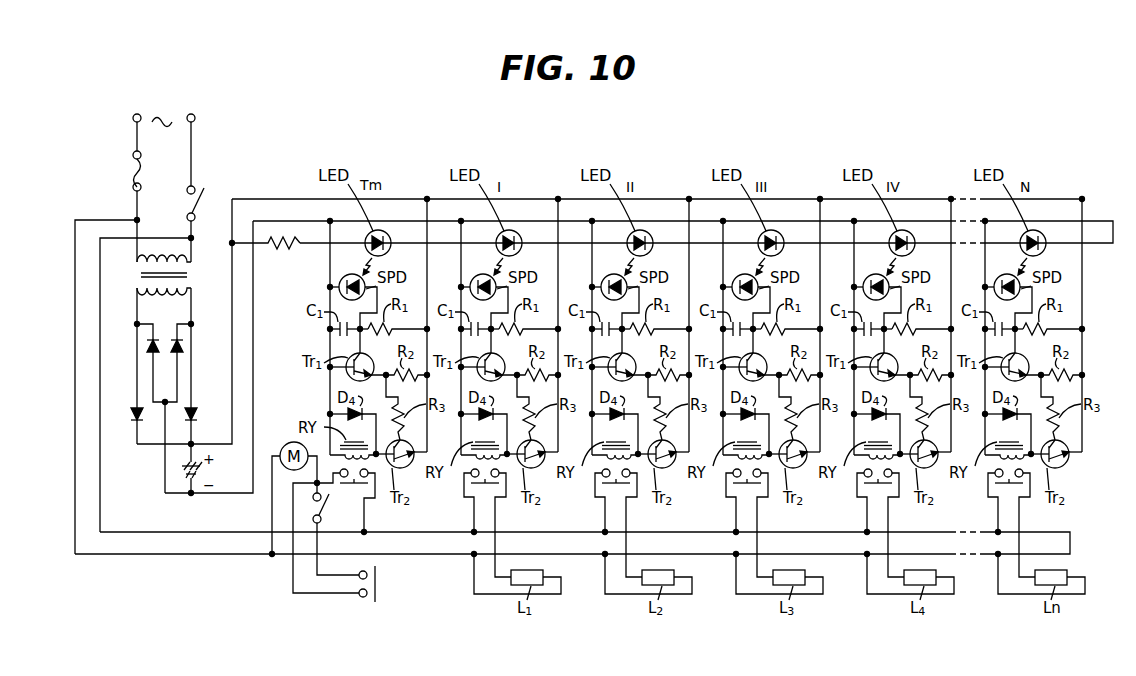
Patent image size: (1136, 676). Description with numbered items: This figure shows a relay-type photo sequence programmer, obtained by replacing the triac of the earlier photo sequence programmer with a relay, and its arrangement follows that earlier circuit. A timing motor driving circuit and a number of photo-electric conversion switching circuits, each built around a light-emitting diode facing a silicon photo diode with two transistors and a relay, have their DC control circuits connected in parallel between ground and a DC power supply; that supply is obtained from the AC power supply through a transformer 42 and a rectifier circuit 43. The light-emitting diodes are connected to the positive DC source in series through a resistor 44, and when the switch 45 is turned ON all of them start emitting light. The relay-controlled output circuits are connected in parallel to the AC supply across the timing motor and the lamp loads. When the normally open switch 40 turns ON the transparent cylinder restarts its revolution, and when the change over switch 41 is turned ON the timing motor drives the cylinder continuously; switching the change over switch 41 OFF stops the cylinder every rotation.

The normally open switch 40 is at (379, 582).
The change over switch 41 is at (325, 513).
The transformer 42 is at (191, 276).
The rectifier circuit 43 is at (175, 392).
The resistor 44 is at (288, 250).
The switch 45 is at (187, 201).